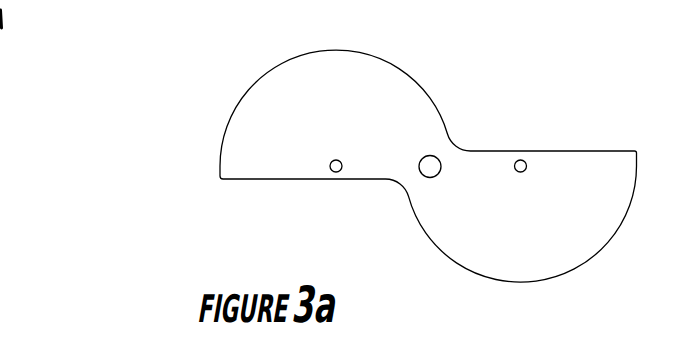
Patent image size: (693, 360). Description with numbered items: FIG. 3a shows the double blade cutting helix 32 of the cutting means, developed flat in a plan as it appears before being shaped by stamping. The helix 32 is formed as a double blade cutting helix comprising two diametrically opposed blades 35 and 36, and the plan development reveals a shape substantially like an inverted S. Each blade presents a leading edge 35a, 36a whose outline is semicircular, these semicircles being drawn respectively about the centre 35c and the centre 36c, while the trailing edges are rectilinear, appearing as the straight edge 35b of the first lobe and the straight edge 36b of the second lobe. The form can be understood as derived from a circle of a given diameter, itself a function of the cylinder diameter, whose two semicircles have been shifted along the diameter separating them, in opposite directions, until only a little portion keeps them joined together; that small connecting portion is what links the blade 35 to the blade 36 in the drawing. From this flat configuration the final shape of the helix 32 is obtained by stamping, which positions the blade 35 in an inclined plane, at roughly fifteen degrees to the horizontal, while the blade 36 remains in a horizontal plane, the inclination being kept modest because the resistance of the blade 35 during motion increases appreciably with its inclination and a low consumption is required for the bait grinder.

The helix 32 is at (397, 253).
The blade 35 is at (262, 110).
The leading edge 35a is at (307, 68).
The straight edge of first lobe 35b is at (268, 180).
The centre 35c is at (336, 172).
The blade 36 is at (603, 228).
The leading edge 36a is at (517, 282).
The straight edge of second lobe 36b is at (596, 151).
The centre 36c is at (521, 159).